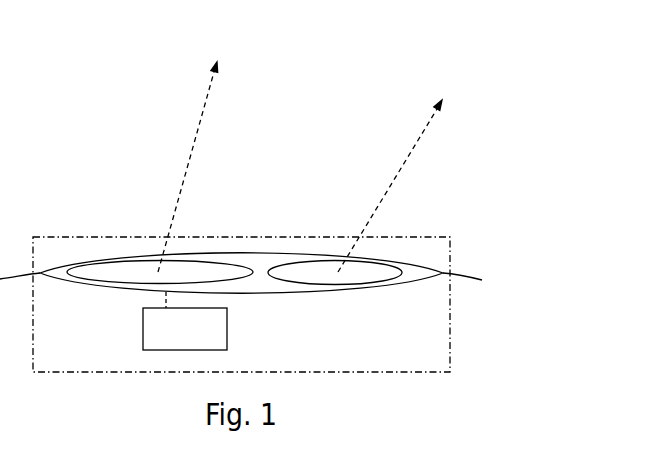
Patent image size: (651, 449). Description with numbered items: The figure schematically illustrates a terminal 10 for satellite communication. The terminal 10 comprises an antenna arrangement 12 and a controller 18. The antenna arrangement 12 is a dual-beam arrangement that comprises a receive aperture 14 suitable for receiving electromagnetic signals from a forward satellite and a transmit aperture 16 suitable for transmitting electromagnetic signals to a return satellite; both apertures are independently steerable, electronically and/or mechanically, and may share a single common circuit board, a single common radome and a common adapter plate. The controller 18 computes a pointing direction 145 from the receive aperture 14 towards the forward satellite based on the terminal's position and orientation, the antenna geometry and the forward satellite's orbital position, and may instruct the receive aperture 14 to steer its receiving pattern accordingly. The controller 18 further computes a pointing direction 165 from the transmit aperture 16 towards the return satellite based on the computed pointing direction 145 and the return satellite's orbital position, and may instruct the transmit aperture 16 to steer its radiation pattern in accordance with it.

The terminal 10 is at (451, 332).
The antenna arrangement 12 is at (63, 265).
The receive aperture 14 is at (125, 263).
The transmit aperture 16 is at (318, 263).
The controller 18 is at (143, 327).
The pointing direction 145 is at (188, 163).
The pointing direction 165 is at (398, 177).